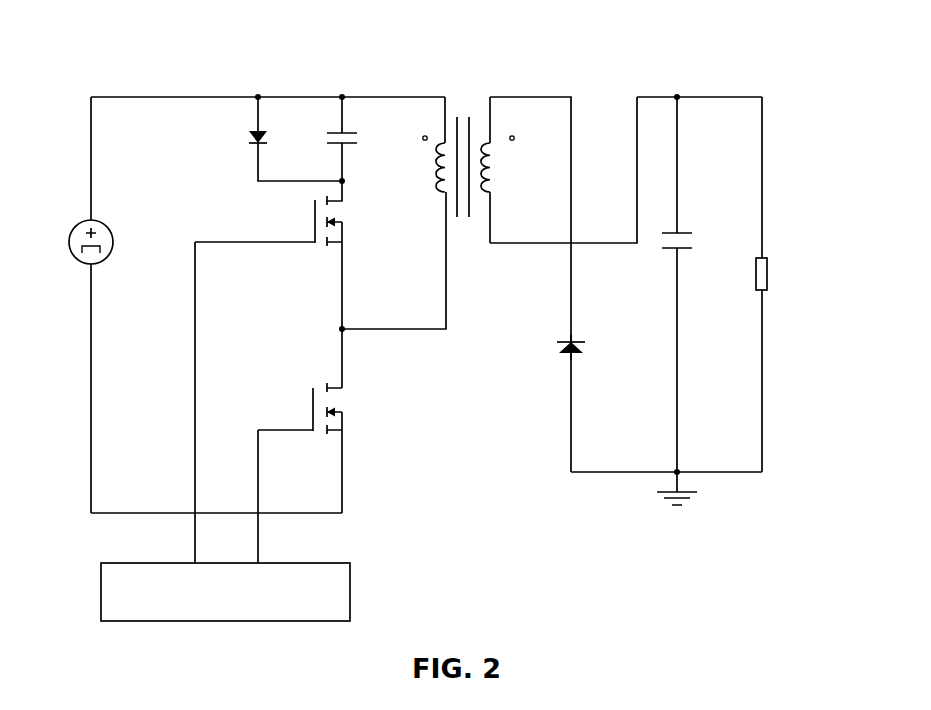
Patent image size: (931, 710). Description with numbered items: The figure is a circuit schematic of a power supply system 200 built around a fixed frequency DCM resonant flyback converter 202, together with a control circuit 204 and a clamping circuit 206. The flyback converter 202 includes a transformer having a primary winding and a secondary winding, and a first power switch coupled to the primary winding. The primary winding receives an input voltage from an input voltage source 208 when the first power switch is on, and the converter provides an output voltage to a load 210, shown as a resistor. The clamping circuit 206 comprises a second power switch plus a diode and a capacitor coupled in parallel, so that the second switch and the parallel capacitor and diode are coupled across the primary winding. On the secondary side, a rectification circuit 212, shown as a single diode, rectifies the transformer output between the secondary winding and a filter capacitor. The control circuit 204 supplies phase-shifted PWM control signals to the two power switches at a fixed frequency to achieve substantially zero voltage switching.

The power supply system 200 is at (166, 46).
The resonant flyback converter 202 is at (470, 98).
The control circuit 204 is at (165, 563).
The clamping circuit 206 is at (249, 224).
The input voltage source 208 is at (87, 221).
The load 210 is at (779, 293).
The rectification circuit 212 is at (558, 378).